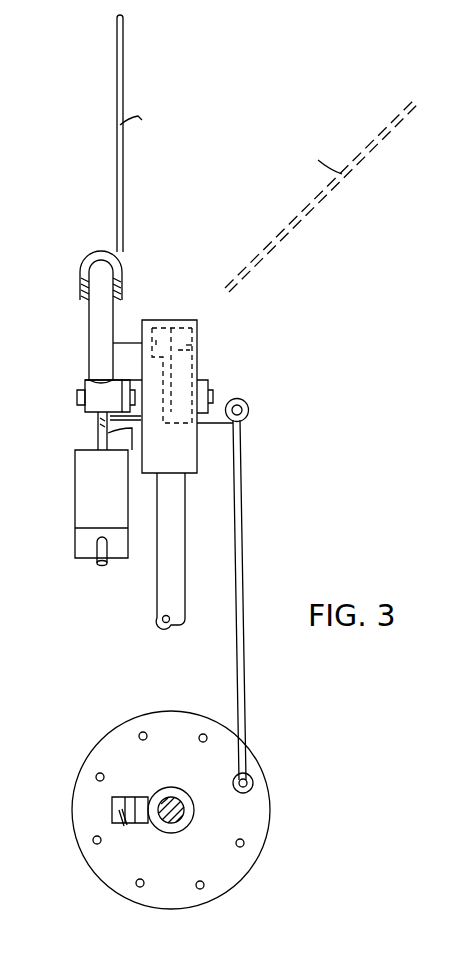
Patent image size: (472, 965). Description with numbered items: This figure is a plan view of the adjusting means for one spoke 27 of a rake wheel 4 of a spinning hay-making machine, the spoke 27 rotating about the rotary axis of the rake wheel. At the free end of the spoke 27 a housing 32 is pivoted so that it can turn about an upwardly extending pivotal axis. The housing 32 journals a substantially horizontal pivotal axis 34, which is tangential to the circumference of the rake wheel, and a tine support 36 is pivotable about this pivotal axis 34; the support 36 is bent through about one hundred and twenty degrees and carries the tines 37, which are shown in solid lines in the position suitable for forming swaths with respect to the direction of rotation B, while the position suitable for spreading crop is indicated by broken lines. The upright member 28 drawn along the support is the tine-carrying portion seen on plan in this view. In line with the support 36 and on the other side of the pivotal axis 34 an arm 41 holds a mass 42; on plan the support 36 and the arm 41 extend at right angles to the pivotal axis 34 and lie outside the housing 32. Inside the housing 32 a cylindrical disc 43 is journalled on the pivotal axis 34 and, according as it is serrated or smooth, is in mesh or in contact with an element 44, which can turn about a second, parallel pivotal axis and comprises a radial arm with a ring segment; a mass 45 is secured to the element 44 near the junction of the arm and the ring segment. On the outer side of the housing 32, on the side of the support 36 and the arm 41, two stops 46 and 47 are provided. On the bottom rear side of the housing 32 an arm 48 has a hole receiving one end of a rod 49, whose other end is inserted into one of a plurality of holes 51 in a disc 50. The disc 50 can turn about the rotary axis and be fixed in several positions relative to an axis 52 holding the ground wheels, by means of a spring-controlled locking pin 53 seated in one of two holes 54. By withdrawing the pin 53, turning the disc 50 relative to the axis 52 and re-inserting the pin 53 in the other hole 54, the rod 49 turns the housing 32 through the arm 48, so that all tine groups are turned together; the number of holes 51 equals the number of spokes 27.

The direction of rotation B is at (248, 56).
The rod 28 is at (116, 86).
The tines 37 is at (270, 195).
The tine support 36 is at (92, 308).
The stop 47 is at (123, 352).
The pivotal axis 34 is at (76, 397).
The stop 46 is at (97, 434).
The mass 42 is at (82, 463).
The arm 41 is at (103, 569).
The mass 45 is at (152, 318).
The housing 32 is at (186, 320).
The element 44 is at (200, 344).
The arm 48 is at (220, 398).
The cylindrical disc 43 is at (203, 440).
The rod 49 is at (238, 529).
The spoke 27 is at (157, 586).
The rake wheel 4 is at (154, 621).
The disc 50 is at (184, 718).
The holes 51 is at (199, 741).
The axis 52 is at (184, 812).
The spring-controlled locking pin 53 is at (128, 797).
The holes 54 is at (128, 836).